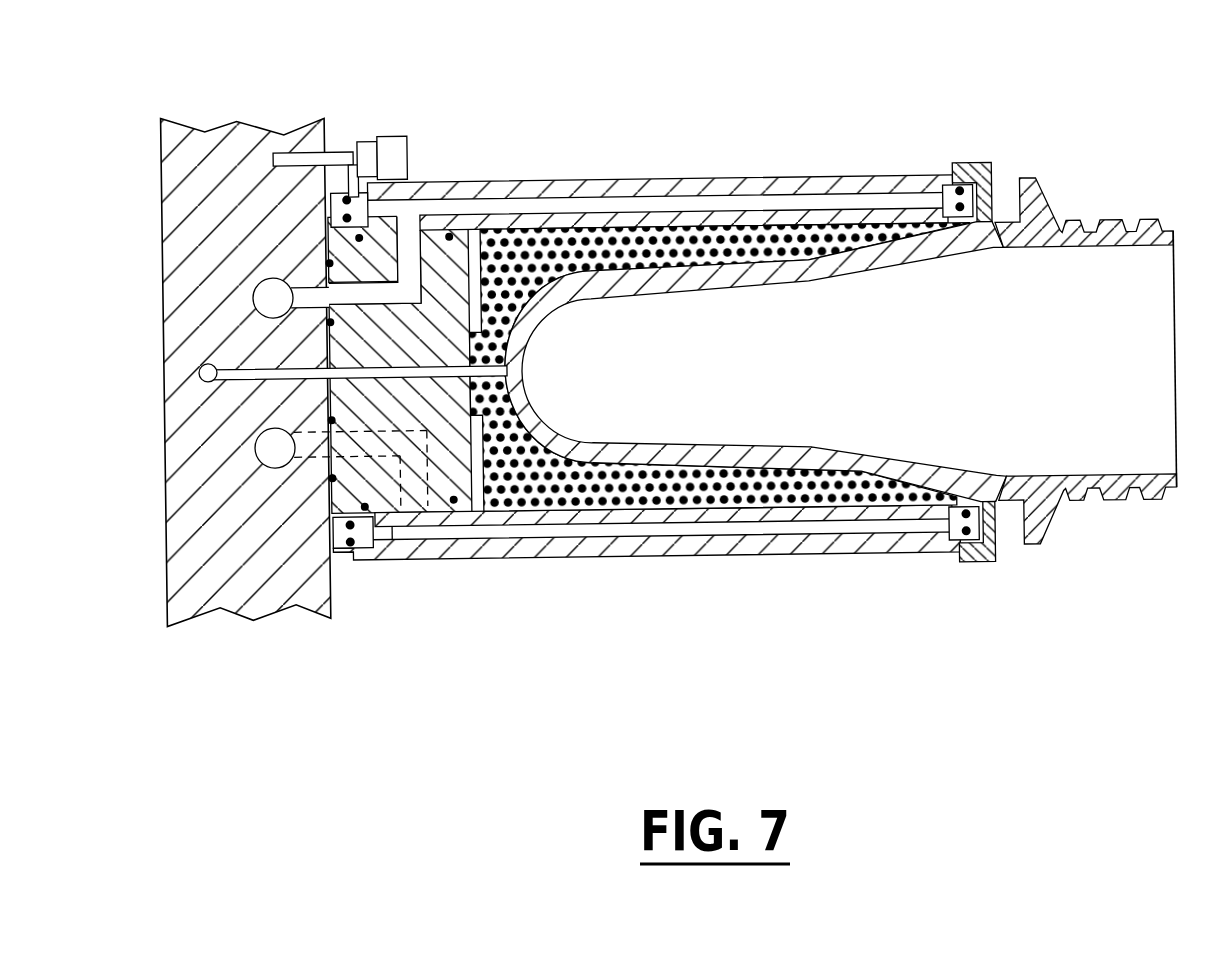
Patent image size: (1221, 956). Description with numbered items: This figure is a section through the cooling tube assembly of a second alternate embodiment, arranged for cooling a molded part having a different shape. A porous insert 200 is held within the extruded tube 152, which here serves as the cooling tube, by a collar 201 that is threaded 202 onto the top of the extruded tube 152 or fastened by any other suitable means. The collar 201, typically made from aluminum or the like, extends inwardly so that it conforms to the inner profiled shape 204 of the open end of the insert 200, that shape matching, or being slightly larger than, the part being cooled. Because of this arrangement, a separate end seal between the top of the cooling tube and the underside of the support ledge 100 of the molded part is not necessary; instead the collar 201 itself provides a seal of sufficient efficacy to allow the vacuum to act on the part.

The support ledge 100 is at (1041, 513).
The extruded tube 152 is at (558, 179).
The porous insert 200 is at (665, 228).
The collar 201 is at (987, 167).
The thread 202 is at (944, 186).
The inner profiled shape 204 is at (992, 250).